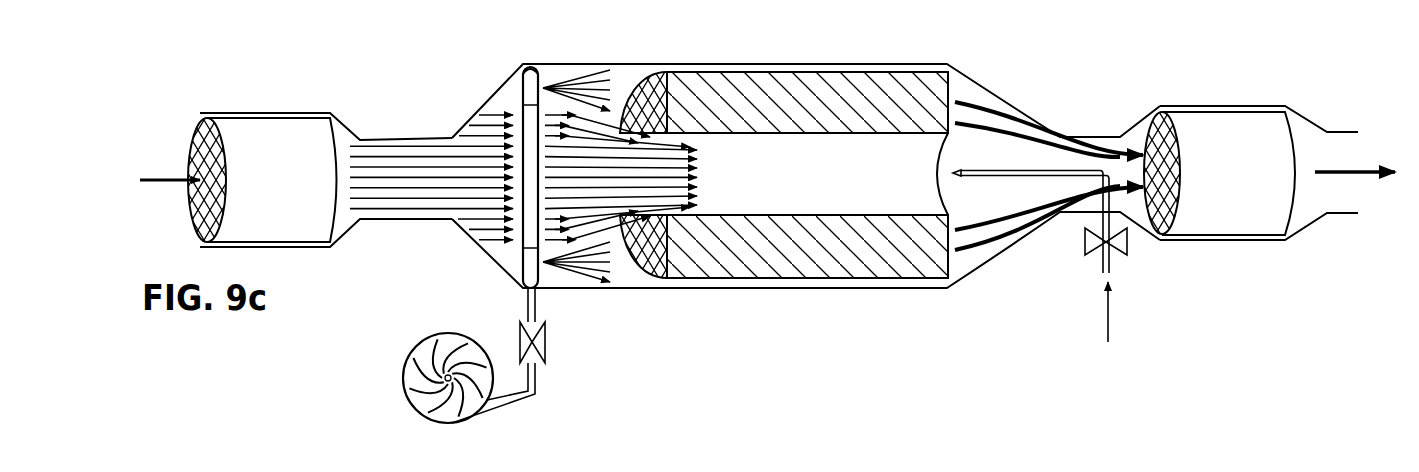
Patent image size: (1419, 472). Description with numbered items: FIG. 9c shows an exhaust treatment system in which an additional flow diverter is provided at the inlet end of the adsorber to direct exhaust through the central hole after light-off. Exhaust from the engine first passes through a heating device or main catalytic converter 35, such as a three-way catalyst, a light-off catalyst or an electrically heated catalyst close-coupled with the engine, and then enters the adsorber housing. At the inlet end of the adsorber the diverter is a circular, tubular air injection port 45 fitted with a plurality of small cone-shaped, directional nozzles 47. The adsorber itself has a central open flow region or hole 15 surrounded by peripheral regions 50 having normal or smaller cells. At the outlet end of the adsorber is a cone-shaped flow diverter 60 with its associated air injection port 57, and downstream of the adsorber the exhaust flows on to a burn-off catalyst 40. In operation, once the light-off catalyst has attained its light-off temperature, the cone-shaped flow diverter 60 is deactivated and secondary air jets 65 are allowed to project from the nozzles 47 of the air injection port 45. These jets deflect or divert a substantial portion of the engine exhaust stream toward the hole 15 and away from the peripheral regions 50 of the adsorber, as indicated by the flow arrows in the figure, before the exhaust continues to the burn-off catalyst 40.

The open flow region 15 is at (742, 186).
The heating device or main catalytic converter 35 is at (263, 122).
The burn-off catalyst 40 is at (1228, 118).
The circular air injection port 45 is at (527, 258).
The cone-shaped directional nozzles 47 is at (540, 67).
The peripheral region having normal/smaller cells 50 is at (780, 87).
The air injection port 57 is at (990, 170).
The cone-shaped flow diverter 60 is at (950, 173).
The secondary air jets 65 is at (570, 73).